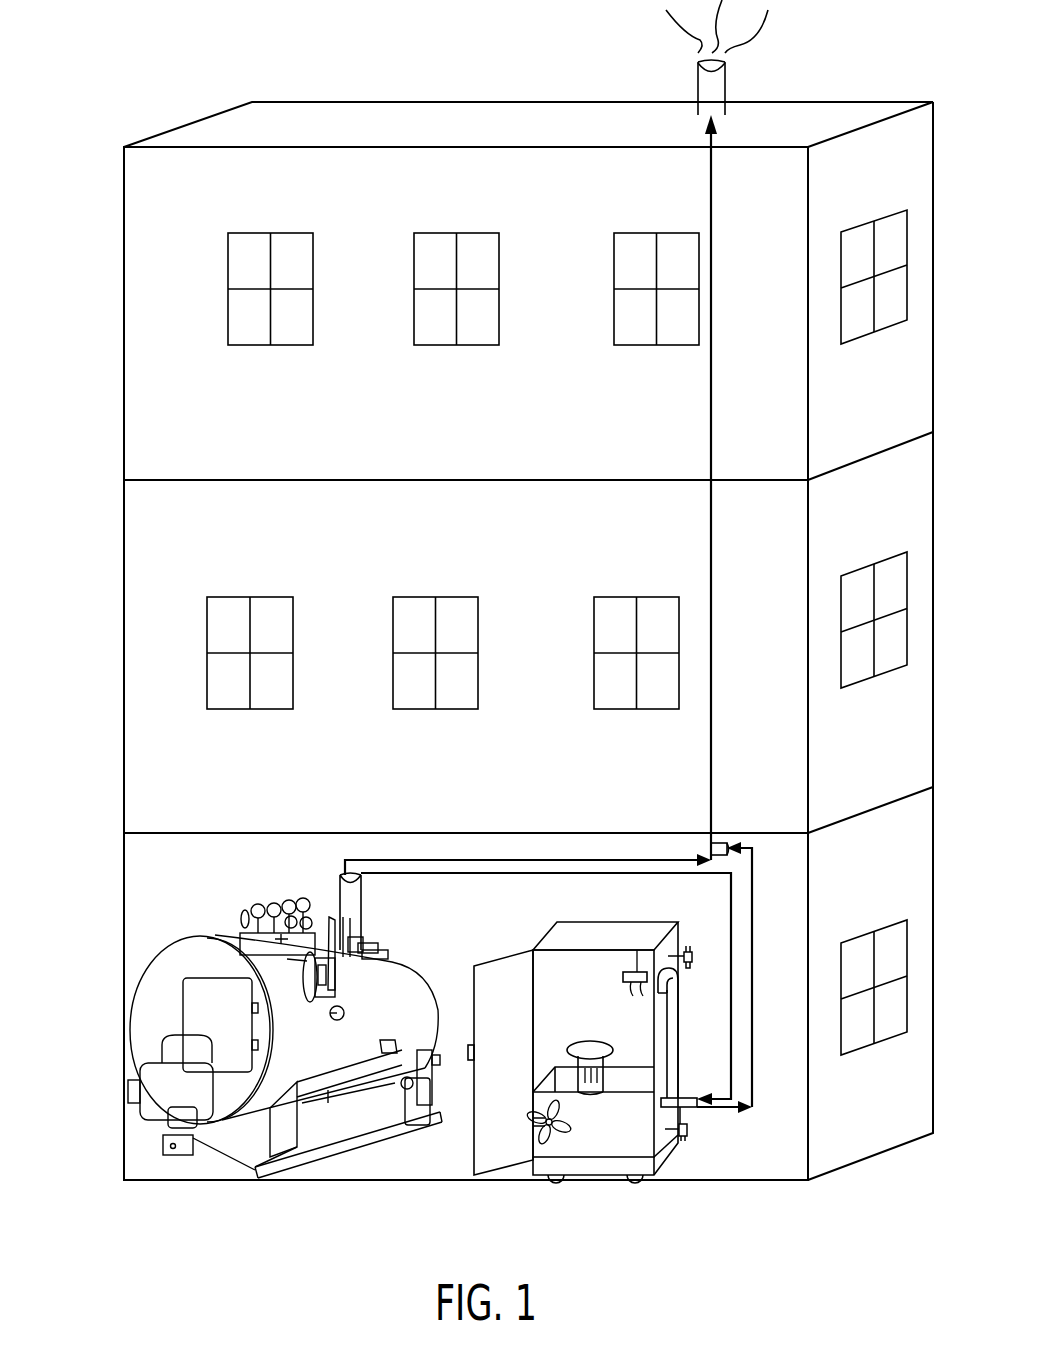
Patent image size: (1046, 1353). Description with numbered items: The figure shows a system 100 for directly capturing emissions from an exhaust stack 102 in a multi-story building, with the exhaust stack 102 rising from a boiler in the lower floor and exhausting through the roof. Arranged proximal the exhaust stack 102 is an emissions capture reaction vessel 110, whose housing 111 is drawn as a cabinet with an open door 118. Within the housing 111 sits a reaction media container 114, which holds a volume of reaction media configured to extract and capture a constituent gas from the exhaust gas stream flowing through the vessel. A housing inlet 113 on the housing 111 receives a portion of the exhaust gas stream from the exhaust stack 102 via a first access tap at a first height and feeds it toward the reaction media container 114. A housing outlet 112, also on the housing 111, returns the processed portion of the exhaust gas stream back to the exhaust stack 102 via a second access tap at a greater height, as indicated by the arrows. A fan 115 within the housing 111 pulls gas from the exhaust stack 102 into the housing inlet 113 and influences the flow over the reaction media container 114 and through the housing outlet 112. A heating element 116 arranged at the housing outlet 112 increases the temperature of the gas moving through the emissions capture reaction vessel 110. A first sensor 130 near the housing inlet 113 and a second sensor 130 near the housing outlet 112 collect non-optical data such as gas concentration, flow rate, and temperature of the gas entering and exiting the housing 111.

The system 100 is at (87, 80).
The exhaust stack 102 is at (709, 92).
The emissions capture reaction vessel 110 is at (660, 921).
The housing 111 is at (583, 962).
The housing outlet 112 is at (672, 982).
The housing inlet 113 is at (690, 1108).
The reaction media container 114 is at (605, 1057).
The fan 115 is at (550, 1135).
The heating element 116 is at (627, 970).
The door 118 is at (500, 968).
The sensor 130 is at (690, 953).